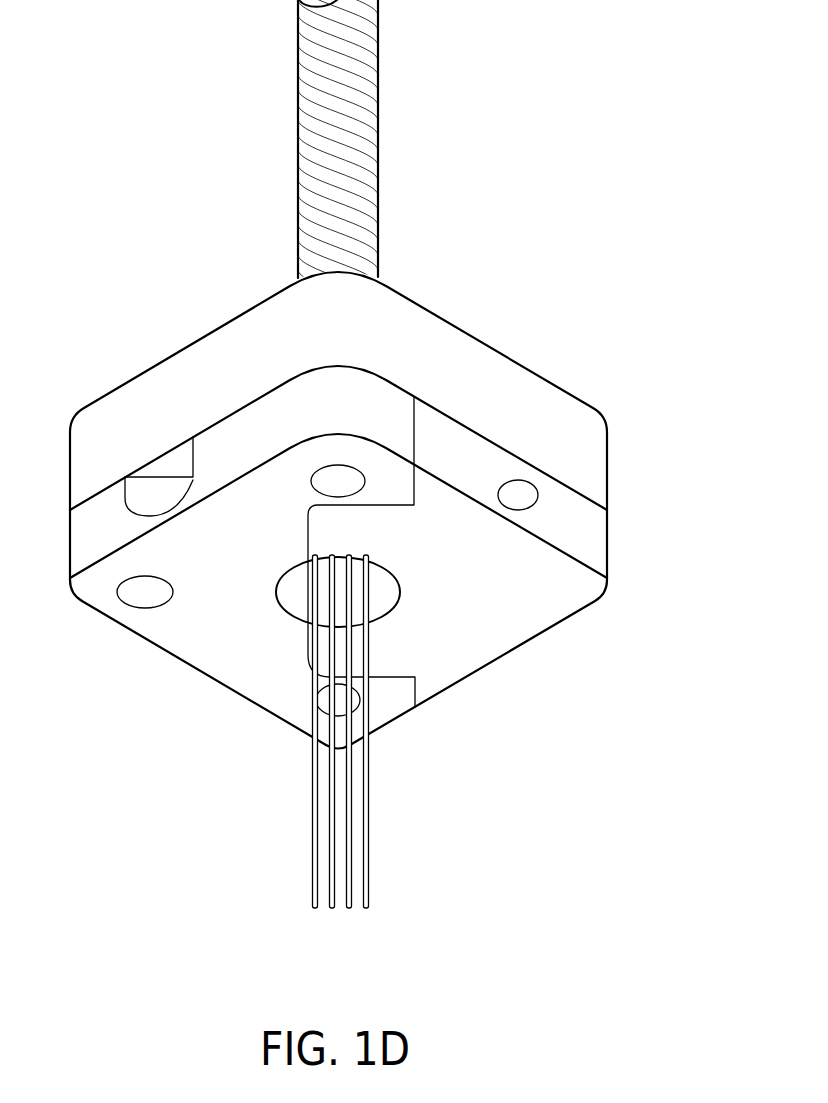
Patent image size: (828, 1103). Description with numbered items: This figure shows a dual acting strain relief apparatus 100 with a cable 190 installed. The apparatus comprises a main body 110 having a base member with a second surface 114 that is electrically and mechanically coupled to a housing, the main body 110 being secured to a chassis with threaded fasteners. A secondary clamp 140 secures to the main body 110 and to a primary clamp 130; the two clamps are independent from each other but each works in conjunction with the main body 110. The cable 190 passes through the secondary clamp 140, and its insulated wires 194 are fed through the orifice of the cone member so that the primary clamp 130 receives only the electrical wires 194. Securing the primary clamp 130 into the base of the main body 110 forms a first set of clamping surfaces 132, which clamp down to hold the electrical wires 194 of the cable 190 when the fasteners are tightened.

The dual acting strain relief apparatus 100 is at (552, 192).
The main body 110 is at (125, 667).
The second surface 114 is at (232, 680).
The primary clamp 130 is at (550, 667).
The first set of clamping surfaces 132 is at (413, 587).
The secondary clamp 140 is at (175, 330).
The cable 190 is at (305, 54).
The insulated wires 194 is at (312, 855).